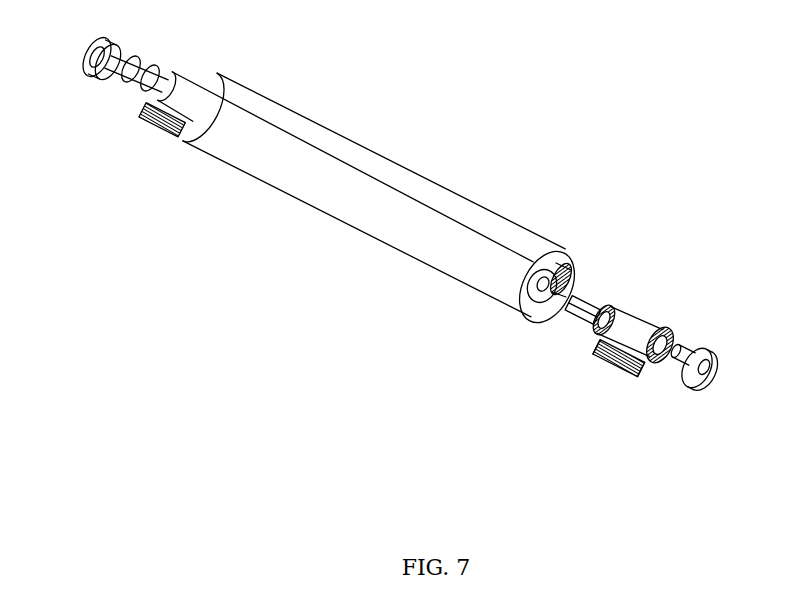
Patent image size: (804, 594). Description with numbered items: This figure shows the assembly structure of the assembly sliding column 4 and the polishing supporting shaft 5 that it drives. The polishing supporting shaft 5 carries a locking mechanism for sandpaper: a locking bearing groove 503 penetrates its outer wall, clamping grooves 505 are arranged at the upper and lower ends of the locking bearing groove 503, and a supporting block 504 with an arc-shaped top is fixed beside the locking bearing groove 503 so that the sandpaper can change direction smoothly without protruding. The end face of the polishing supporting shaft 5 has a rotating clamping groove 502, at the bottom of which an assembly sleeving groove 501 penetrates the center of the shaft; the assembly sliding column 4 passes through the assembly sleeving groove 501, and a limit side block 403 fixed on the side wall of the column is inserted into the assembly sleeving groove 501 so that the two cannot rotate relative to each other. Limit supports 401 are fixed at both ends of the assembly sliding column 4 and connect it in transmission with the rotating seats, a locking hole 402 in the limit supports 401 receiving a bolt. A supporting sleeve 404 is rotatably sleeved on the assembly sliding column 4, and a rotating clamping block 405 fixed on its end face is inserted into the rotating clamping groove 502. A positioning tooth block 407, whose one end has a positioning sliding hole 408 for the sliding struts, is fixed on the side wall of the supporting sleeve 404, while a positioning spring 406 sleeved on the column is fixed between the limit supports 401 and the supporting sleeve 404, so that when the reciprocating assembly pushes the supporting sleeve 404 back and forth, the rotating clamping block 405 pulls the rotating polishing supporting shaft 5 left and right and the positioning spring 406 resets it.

The polishing supporting shaft 5 is at (397, 212).
The positioning spring 406 is at (150, 91).
The assembly sleeving groove 501 is at (520, 303).
The rotating clamping groove 502 is at (524, 282).
The locking bearing groove 503 is at (572, 283).
The supporting block 504 is at (568, 270).
The clamping grooves 505 is at (537, 243).
The limit side block 403 is at (577, 311).
The rotating clamping block 405 is at (611, 305).
The supporting sleeve 404 is at (652, 331).
The positioning tooth block 407 is at (611, 358).
The positioning sliding hole 408 is at (640, 365).
The assembly sliding column 4 is at (688, 343).
The locking hole 402 is at (714, 358).
The limit supports 401 is at (702, 384).